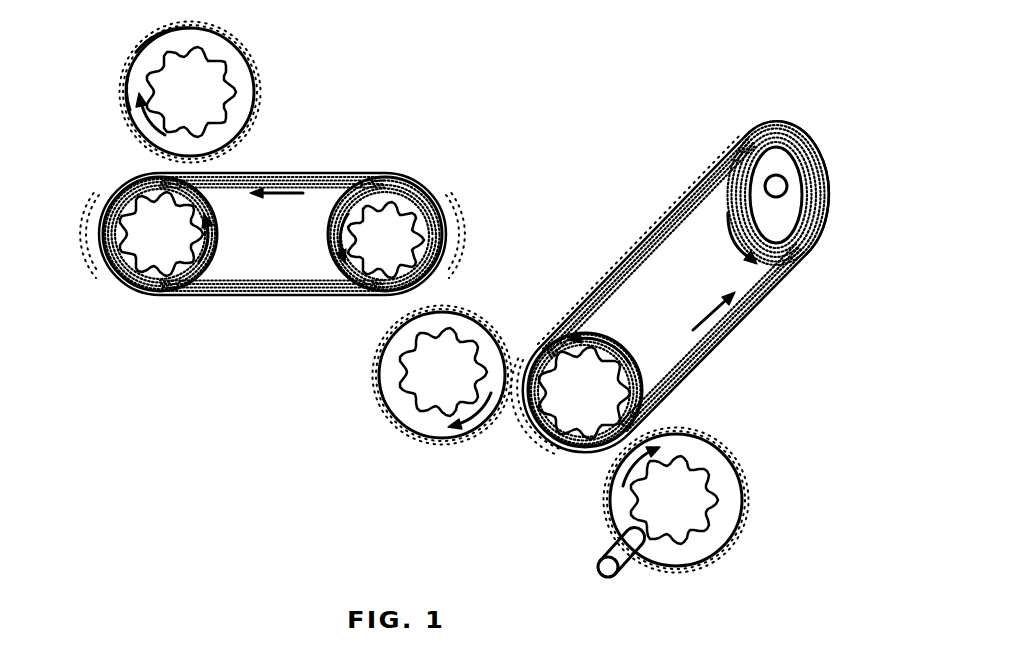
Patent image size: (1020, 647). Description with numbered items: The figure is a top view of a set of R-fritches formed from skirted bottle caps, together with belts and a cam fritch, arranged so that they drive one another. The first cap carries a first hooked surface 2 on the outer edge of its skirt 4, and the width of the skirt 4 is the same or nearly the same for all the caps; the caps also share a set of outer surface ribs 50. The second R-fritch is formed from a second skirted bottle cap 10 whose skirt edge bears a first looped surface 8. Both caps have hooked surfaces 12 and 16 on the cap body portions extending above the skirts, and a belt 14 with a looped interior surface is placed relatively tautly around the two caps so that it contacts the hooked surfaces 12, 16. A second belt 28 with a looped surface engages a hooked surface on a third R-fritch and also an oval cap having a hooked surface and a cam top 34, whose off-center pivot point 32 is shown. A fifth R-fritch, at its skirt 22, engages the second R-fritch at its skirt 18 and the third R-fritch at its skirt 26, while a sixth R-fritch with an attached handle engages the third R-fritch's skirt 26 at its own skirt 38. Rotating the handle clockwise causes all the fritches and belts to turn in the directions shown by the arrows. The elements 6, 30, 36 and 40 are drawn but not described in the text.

The first hooked surface 2 is at (230, 35).
The skirt 4 is at (143, 80).
The roller core 6 is at (207, 100).
The outer surface ribs 50 is at (167, 53).
The first looped surface 8 is at (137, 175).
The second skirted bottle cap 10 is at (157, 247).
The hooked surface 12 is at (205, 262).
The belt 14 is at (270, 293).
The hooked surface 16 is at (353, 207).
The skirt 18 is at (443, 197).
The skirt 22 is at (387, 420).
The skirt 26 is at (530, 442).
The belt 28 is at (663, 217).
The belt surface 30 is at (736, 180).
The pivot point 32 is at (784, 182).
The cam top 34 is at (778, 222).
The nozzle 36 is at (600, 560).
The skirt 38 is at (727, 447).
The roller core 40 is at (723, 503).